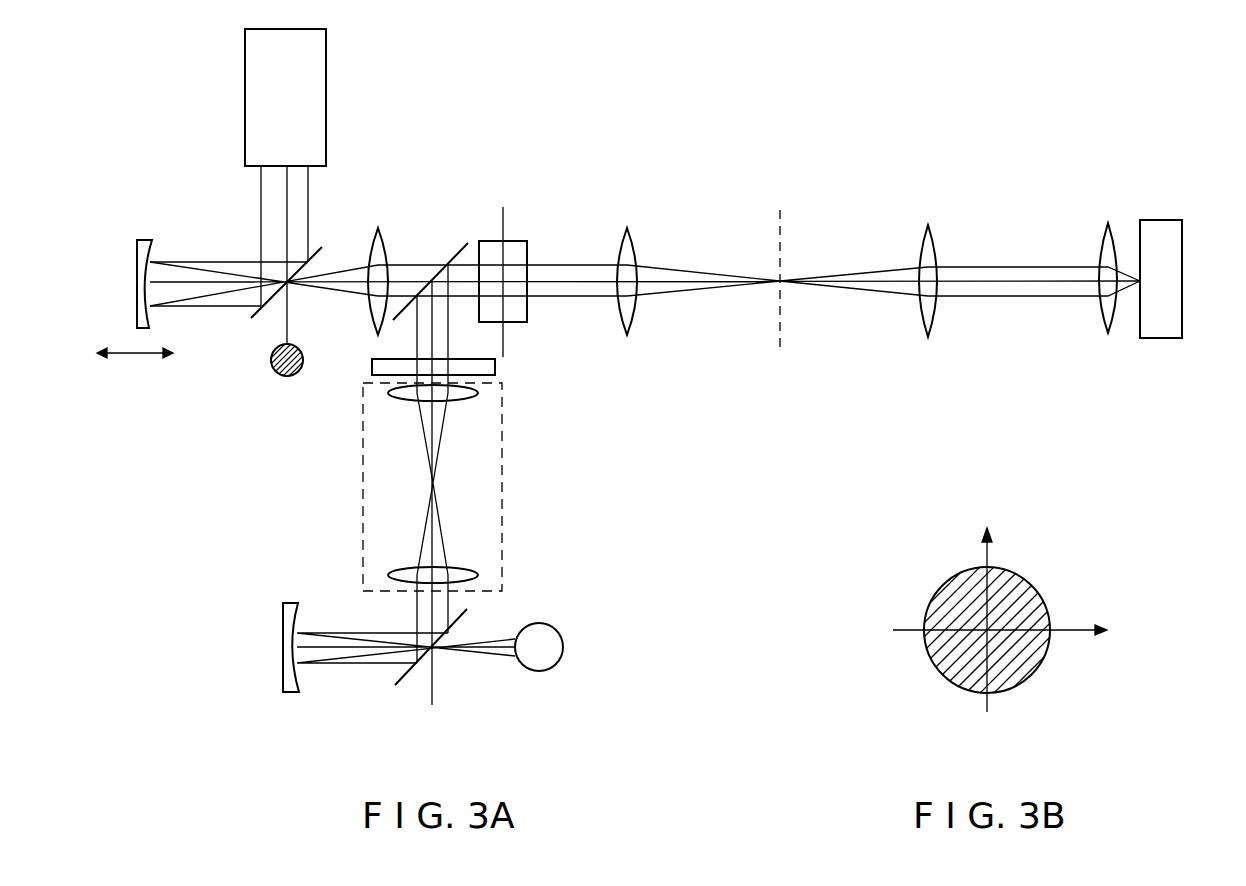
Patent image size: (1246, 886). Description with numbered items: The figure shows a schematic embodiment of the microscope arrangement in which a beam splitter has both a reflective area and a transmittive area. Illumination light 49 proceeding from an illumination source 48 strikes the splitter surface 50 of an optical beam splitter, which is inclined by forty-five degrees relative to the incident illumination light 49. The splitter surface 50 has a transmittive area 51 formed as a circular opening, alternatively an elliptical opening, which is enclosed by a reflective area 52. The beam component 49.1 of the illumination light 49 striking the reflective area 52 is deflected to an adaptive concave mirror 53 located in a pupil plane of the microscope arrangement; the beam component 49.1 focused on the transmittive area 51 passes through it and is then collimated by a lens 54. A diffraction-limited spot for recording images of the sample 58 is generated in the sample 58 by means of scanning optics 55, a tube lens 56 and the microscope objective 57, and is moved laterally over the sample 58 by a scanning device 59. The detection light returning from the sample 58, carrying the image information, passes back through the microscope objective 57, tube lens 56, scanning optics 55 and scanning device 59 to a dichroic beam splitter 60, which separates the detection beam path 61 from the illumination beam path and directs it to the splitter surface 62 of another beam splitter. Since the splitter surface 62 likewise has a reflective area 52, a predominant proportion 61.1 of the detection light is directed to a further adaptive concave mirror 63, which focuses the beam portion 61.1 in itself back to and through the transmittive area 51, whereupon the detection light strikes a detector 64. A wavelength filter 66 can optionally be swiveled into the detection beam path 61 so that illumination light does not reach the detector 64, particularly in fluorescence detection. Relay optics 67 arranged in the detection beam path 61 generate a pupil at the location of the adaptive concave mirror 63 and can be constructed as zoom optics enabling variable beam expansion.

In FIG. 3A, the illumination source 48 is at (320, 78).
In FIG. 3A, the illumination light 49 is at (262, 193).
In FIG. 3A, the beam component 49.1 is at (222, 267).
In FIG. 3A, the splitter surface 50 is at (270, 305).
In FIG. 3B, the splitter surface 50 is at (932, 681).
In FIG. 3B, the transmittive area 51 is at (990, 624).
In FIG. 3B, the reflective area 52 is at (950, 613).
In FIG. 3A, the adaptive concave mirror 53 is at (137, 258).
In FIG. 3A, the lens 54 is at (385, 240).
In FIG. 3A, the scanning optics 55 is at (626, 228).
In FIG. 3A, the tube lens 56 is at (920, 232).
In FIG. 3A, the microscope objective 57 is at (1103, 237).
In FIG. 3A, the sample 58 is at (1162, 222).
In FIG. 3A, the scanning device 59 is at (520, 241).
In FIG. 3A, the dichroic beam splitter 60 is at (455, 250).
In FIG. 3A, the detection beam path 61 is at (420, 347).
In FIG. 3A, the beam portion 61.1 is at (357, 630).
In FIG. 3A, the splitter surface 62 is at (470, 616).
In FIG. 3A, the adaptive concave mirror 63 is at (283, 648).
In FIG. 3A, the detector 64 is at (563, 651).
In FIG. 3A, the wavelength filter 66 is at (497, 368).
In FIG. 3A, the relay optics 67 is at (363, 478).